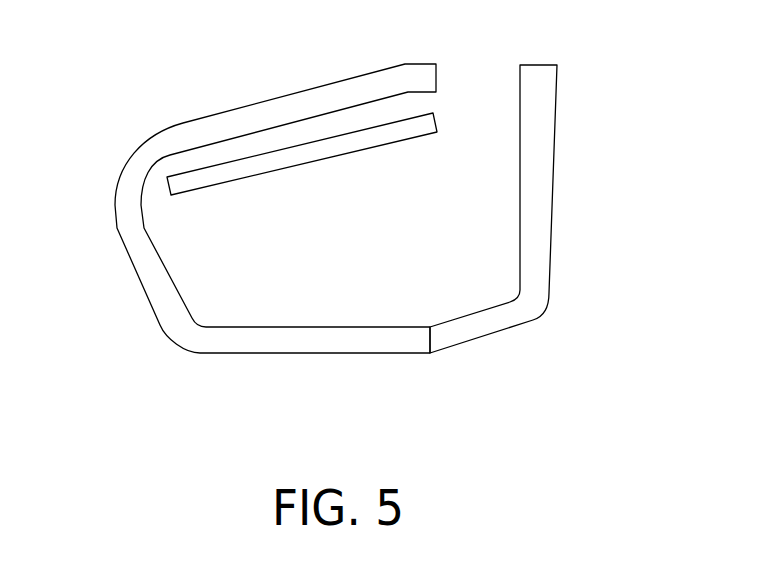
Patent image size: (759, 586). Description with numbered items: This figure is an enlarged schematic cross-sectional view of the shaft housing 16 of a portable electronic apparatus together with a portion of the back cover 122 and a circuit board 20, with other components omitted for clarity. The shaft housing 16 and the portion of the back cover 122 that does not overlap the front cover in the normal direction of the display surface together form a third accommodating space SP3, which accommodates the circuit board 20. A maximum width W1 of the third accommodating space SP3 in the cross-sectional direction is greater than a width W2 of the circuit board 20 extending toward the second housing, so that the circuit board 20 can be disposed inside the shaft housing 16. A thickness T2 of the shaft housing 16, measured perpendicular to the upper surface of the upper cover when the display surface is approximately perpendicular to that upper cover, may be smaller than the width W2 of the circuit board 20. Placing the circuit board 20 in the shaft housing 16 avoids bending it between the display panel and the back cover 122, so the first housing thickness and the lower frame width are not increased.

The shaft housing 16 is at (227, 130).
The back cover 122 is at (537, 154).
The circuit board 20 is at (183, 182).
The third accommodating space SP3 is at (380, 285).
The maximum width of the third accommodating space W1 is at (437, 100).
The width of the circuit board W2 is at (443, 147).
The thickness of the shaft housing T2 is at (436, 64).